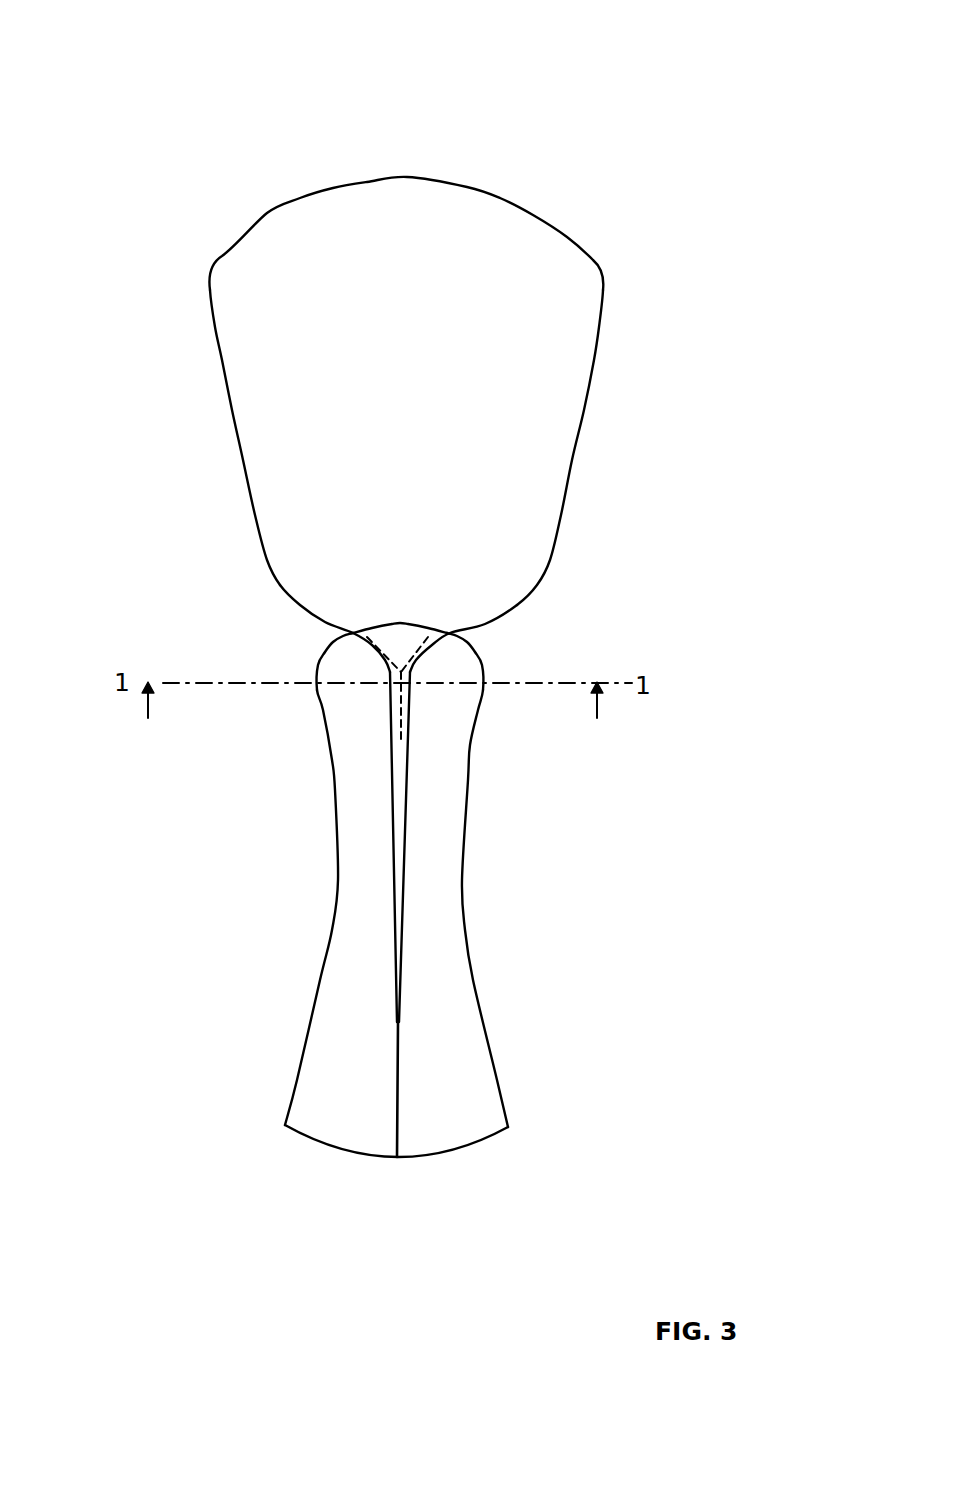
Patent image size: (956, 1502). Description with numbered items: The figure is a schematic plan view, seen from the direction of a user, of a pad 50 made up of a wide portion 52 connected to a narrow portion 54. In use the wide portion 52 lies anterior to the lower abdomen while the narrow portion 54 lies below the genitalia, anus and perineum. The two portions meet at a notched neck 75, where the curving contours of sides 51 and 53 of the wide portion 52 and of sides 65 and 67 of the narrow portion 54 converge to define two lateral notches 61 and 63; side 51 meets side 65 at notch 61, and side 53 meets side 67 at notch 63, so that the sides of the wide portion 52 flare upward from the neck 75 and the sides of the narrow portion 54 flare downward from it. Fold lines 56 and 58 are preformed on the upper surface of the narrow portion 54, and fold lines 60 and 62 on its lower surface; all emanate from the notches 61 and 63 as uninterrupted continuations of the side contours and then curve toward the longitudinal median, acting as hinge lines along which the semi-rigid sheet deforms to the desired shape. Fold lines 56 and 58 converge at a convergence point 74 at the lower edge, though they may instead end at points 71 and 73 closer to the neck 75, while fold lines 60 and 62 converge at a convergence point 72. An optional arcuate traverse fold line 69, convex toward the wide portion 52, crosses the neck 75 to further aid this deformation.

The pad 50 is at (486, 62).
The side of wide portion 51 is at (517, 598).
The wide portion 52 is at (543, 248).
The side of wide portion 53 is at (296, 606).
The narrow portion 54 is at (470, 745).
The fold line 56 is at (428, 649).
The fold line 58 is at (374, 649).
The fold line 60 is at (422, 639).
The lateral notch 61 is at (451, 634).
The fold line 62 is at (378, 639).
The lateral notch 63 is at (351, 634).
The side of narrow portion 65 is at (484, 664).
The side of narrow portion 67 is at (318, 664).
The traverse fold line 69 is at (406, 626).
The point 71 is at (411, 790).
The convergence point 72 is at (403, 742).
The point 73 is at (390, 792).
The convergence point 74 is at (398, 1162).
The neck 75 is at (403, 643).